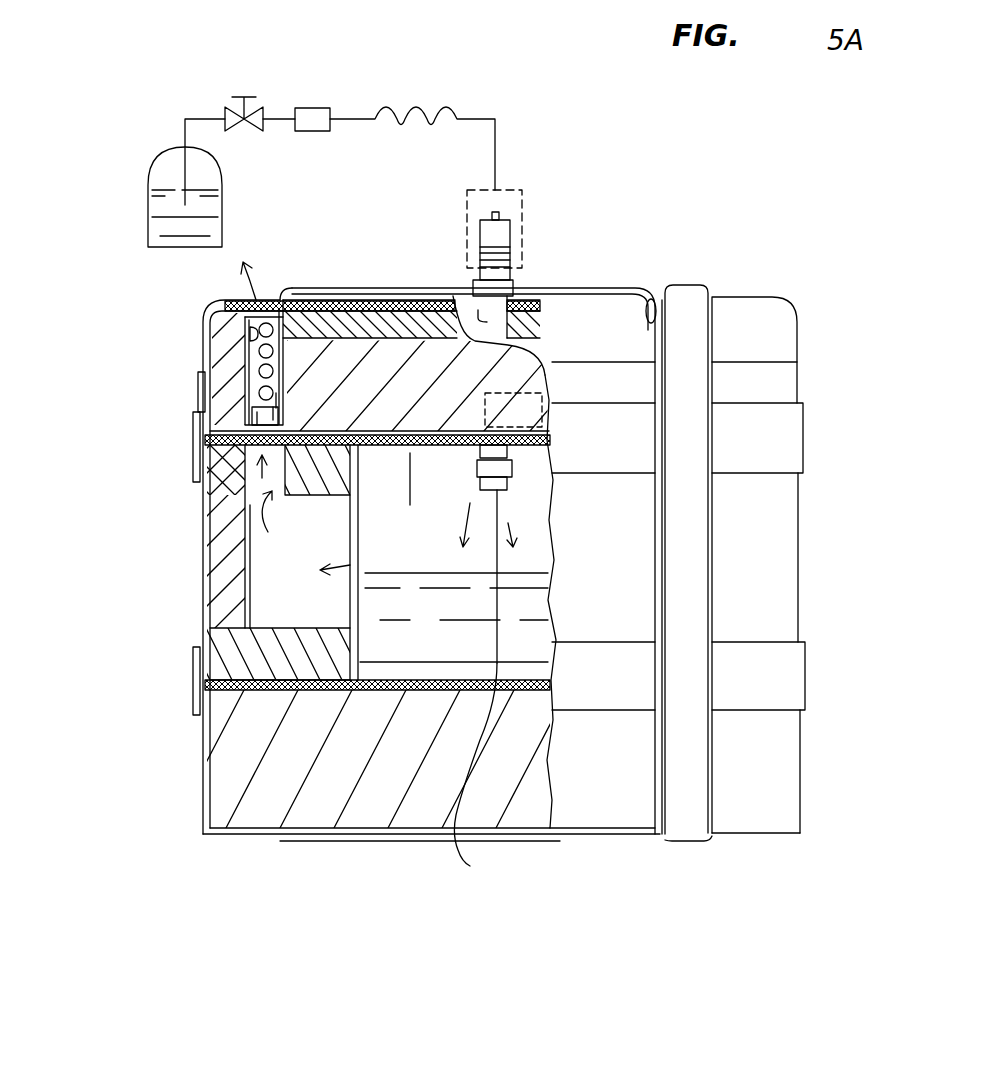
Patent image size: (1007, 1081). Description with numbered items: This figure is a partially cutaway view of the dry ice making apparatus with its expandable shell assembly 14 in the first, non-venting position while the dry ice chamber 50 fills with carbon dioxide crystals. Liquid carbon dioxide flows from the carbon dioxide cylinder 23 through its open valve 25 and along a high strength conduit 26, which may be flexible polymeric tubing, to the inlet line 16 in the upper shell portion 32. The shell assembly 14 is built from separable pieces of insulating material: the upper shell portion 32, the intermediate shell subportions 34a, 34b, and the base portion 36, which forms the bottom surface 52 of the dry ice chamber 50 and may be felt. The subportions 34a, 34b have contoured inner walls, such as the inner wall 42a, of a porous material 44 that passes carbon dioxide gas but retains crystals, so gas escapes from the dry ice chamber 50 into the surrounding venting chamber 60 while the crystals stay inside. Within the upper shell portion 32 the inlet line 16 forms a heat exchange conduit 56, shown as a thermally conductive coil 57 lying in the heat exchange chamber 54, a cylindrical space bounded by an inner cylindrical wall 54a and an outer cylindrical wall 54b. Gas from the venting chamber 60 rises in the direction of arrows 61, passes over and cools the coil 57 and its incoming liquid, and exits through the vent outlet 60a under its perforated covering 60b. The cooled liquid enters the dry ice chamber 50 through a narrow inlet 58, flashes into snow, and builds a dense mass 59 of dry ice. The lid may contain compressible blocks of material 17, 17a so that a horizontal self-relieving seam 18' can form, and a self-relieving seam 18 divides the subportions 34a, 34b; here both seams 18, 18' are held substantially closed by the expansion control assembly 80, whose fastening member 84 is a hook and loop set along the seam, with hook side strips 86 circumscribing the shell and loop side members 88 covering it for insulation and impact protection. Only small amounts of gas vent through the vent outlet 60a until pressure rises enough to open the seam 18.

The expandable shell assembly 14 is at (752, 280).
The inlet line 16 is at (516, 243).
The block of material 17 is at (500, 243).
The block of material 17a is at (455, 335).
The self-relieving seam 18 is at (456, 528).
The horizontal self-relieving seam 18' is at (207, 567).
The carbon dioxide cylinder 23 is at (210, 228).
The valve 25 is at (240, 98).
The high strength conduit 26 is at (453, 117).
The upper shell portion 32 is at (218, 352).
The intermediate shell subportion 34a is at (232, 565).
The intermediate shell subportion 34b is at (770, 600).
The base portion 36 is at (235, 786).
The inner wall 42a is at (273, 598).
The porous material 44 is at (192, 707).
The dry ice chamber 50 is at (445, 494).
The bottom surface 52 is at (432, 655).
The heat exchange chamber 54 is at (283, 330).
The inner cylindrical wall 54a is at (280, 402).
The outer cylindrical wall 54b is at (235, 313).
The heat exchange conduit 56 is at (318, 335).
The thermally conductive coil 57 is at (497, 405).
The narrow inlet 58 is at (513, 482).
The mass of dry ice 59 is at (480, 772).
The venting chamber 60 is at (273, 578).
The vent outlet 60a is at (252, 300).
The perforated covering 60b is at (280, 303).
The arrows 61 is at (272, 300).
The expansion control assembly 80 is at (706, 465).
The fastening member 84 is at (653, 287).
The hook side strips 86 is at (710, 372).
The loop side members 88 is at (190, 416).